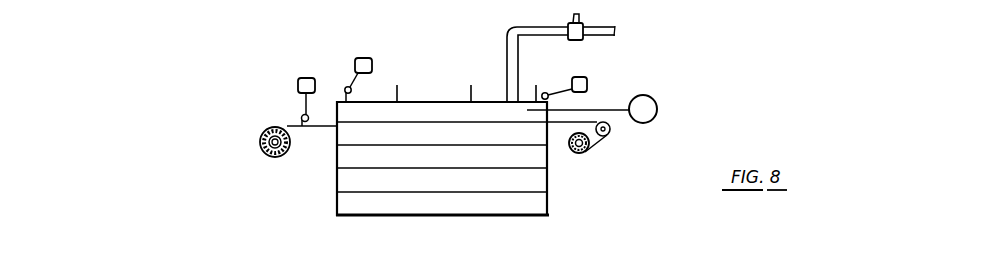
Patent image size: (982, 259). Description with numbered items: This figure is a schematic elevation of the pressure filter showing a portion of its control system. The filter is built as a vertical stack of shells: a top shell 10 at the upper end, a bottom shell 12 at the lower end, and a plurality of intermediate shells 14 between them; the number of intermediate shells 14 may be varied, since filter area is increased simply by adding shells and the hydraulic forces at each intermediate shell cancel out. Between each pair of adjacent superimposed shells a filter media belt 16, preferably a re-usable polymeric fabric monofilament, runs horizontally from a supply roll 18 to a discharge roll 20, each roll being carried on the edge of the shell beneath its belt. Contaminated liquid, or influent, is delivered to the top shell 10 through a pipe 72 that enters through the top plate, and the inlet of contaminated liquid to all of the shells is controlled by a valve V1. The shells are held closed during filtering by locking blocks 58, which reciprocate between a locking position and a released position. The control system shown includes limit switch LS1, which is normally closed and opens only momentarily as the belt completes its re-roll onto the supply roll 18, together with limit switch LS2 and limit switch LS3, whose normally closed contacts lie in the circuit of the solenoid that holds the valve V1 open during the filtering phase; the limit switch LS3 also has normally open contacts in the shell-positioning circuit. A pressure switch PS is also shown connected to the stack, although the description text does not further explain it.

The top shell 10 is at (445, 110).
The bottom shell 12 is at (440, 207).
The intermediate shells 14 is at (530, 134).
The filter media belt 16 is at (318, 129).
The supply roll 18 is at (261, 137).
The discharge roll 20 is at (586, 150).
The locking blocks 58 is at (398, 89).
The pipe 72 is at (507, 57).
The valve V1 is at (578, 13).
The limit switch LS1 is at (304, 78).
The limit switch LS2 is at (584, 77).
The limit switch LS3 is at (361, 58).
The pressure switch PS is at (657, 109).